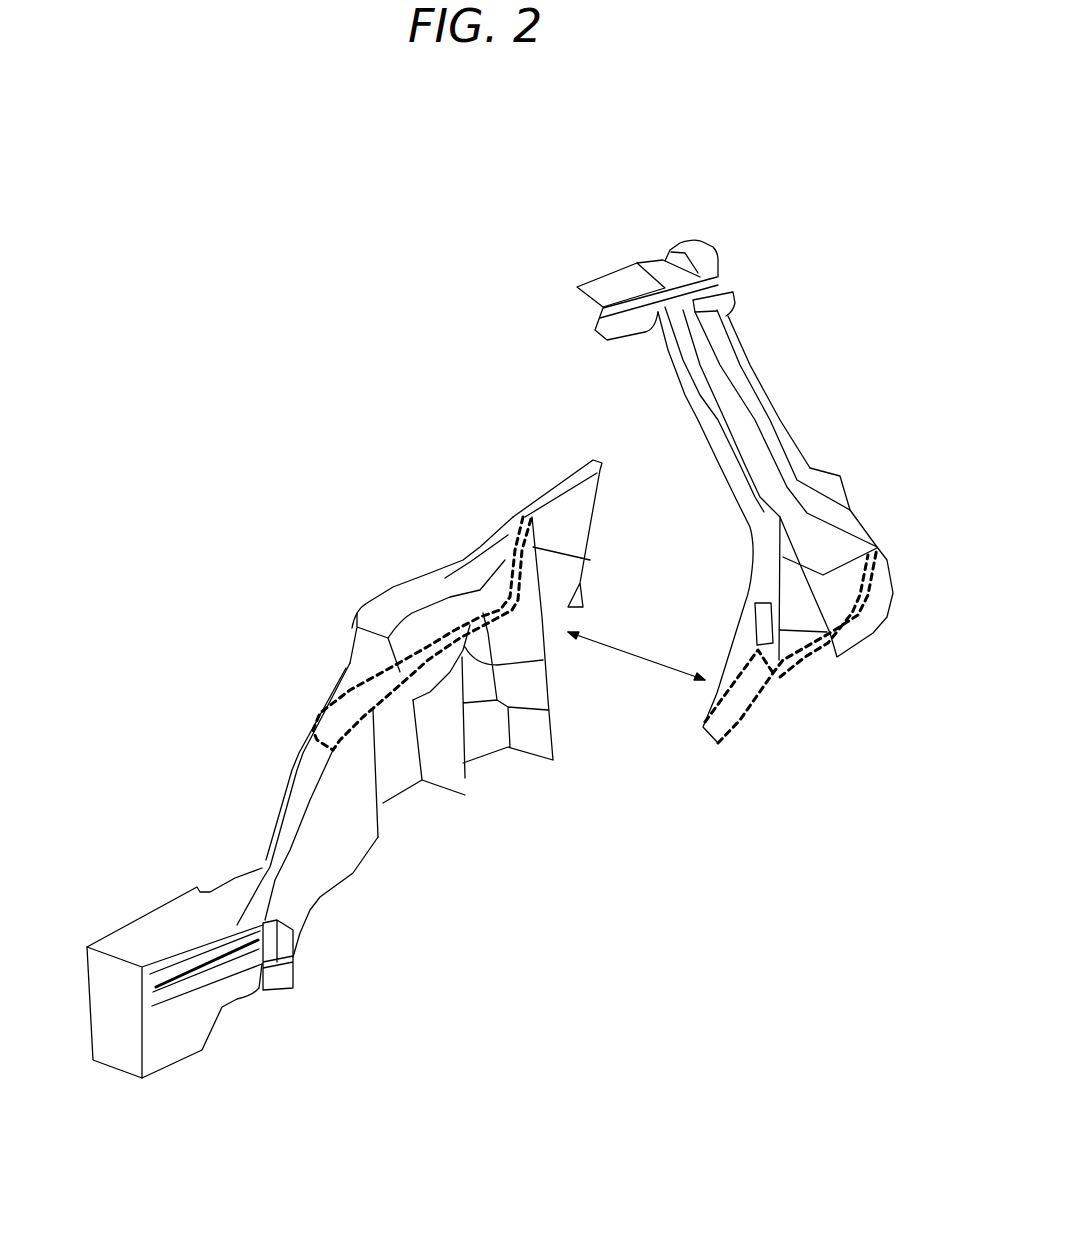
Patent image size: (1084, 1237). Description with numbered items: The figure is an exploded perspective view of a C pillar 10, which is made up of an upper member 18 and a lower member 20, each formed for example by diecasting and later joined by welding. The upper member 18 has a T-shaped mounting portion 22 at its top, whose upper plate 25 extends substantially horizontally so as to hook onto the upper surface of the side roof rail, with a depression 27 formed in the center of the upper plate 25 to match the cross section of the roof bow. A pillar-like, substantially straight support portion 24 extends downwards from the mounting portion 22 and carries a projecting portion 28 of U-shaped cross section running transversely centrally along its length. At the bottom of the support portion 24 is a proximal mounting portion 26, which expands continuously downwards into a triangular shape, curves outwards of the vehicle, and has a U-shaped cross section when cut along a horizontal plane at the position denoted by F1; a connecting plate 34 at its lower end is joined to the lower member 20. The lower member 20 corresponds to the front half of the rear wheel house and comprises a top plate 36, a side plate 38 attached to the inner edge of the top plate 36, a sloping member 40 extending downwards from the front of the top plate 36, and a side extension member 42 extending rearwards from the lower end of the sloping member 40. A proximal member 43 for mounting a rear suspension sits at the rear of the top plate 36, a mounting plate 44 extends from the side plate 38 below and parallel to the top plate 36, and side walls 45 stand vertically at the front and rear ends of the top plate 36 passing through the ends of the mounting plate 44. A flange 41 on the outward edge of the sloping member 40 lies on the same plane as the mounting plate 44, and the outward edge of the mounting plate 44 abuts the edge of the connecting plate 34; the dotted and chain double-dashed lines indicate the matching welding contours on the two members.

The C pillar 10 is at (800, 262).
The upper member 18 is at (790, 387).
The lower member 20 is at (323, 600).
The mounting portion 22 is at (577, 270).
The support portion 24 is at (705, 368).
The upper plate 25 is at (612, 278).
The proximal mounting portion 26 is at (847, 577).
The depression 27 is at (653, 267).
The projecting portion 28 is at (753, 443).
The connecting plate 34 is at (843, 657).
The top plate 36 is at (422, 587).
The side plate 38 is at (400, 773).
The sloping member 40 is at (243, 886).
The flange 41 is at (340, 863).
The side extension member 42 is at (190, 1033).
The proximal member 43 is at (563, 487).
The mounting plate 44 is at (543, 660).
The side walls 45 is at (455, 778).
The position F1 is at (905, 548).